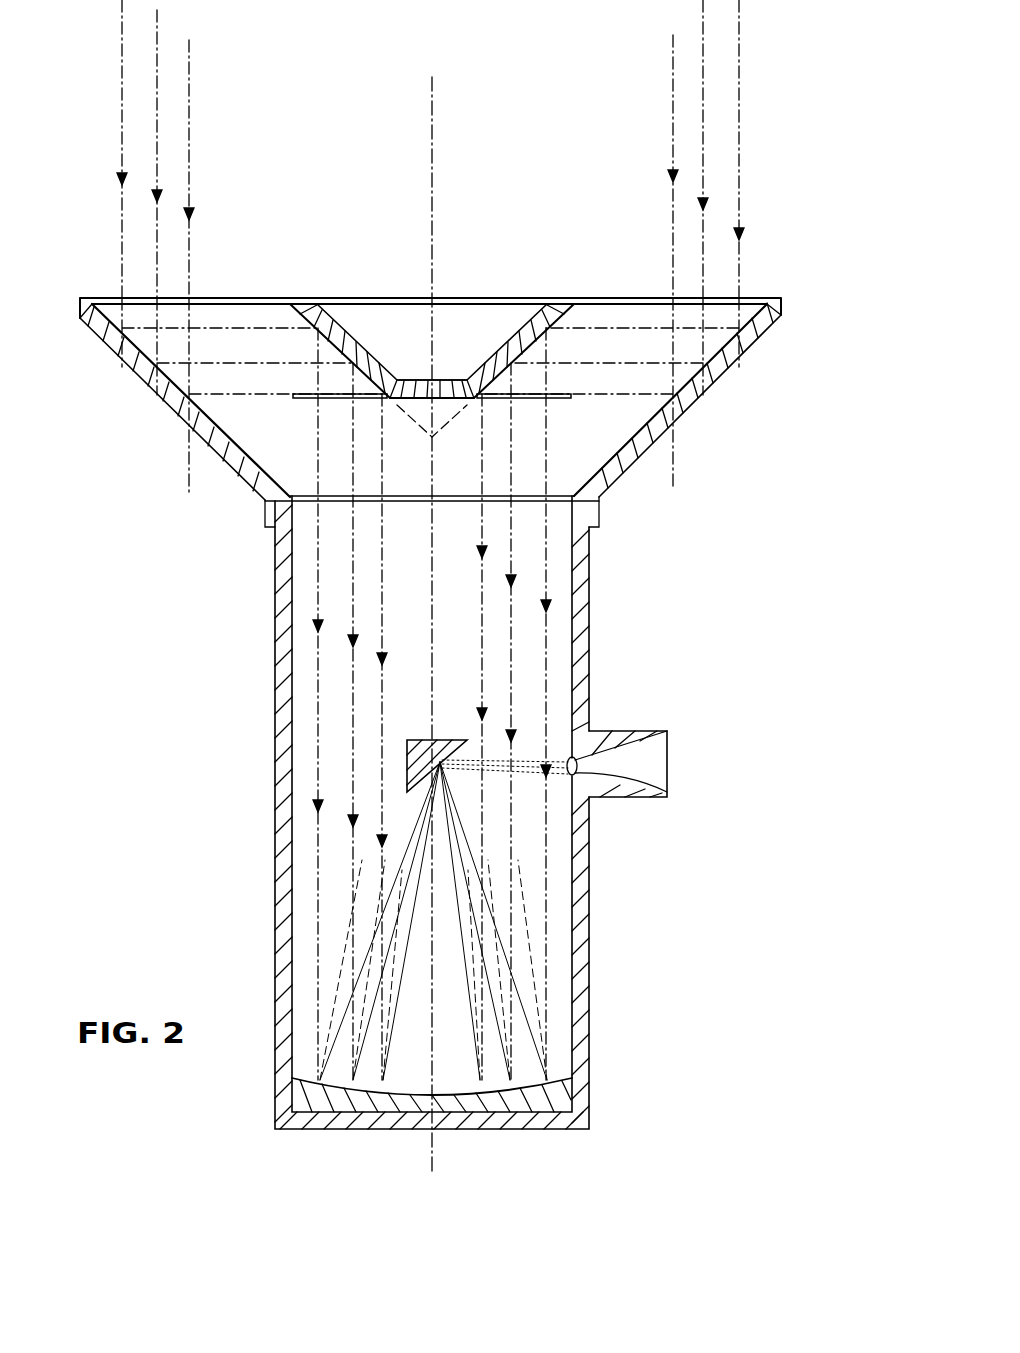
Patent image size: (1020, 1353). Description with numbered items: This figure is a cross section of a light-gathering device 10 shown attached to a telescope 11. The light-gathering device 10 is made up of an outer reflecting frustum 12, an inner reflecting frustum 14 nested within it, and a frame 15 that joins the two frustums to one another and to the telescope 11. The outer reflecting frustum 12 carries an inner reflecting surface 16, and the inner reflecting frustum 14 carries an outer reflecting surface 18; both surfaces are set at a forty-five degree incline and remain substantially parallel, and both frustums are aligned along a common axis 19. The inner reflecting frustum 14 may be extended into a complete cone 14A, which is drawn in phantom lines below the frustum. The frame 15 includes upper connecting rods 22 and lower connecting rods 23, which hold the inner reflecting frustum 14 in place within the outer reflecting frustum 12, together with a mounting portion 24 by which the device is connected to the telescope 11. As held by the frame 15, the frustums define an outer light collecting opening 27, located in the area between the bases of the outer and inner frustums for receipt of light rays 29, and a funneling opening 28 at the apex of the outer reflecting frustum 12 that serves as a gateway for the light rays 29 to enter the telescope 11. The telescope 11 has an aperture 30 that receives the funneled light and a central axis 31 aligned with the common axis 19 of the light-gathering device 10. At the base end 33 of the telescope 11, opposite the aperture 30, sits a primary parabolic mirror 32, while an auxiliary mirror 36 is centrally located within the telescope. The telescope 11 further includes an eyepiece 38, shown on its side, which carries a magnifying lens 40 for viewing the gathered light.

The light-gathering device 10 is at (790, 247).
The telescope 11 is at (596, 930).
The outer reflecting frustum 12 is at (724, 384).
The inner reflecting frustum 14 is at (466, 370).
The complete cone 14A is at (565, 400).
The frame 15 is at (104, 290).
The inner reflecting surface 16 is at (118, 340).
The outer reflecting surface 18 is at (330, 350).
The common axis 19 is at (432, 130).
The upper connecting rods 22 is at (291, 302).
The lower connecting rods 23 is at (307, 400).
The mounting portion 24 is at (262, 520).
The outer light collecting opening 27 is at (230, 318).
The funneling opening 28 is at (360, 505).
The light rays 29 is at (189, 63).
The aperture 30 is at (550, 507).
The central axis 31 is at (433, 1018).
The primary parabolic mirror 32 is at (560, 1082).
The base end 33 is at (535, 1130).
The auxiliary mirror 36 is at (440, 762).
The eyepiece 38 is at (667, 731).
The magnifying lens 40 is at (576, 777).